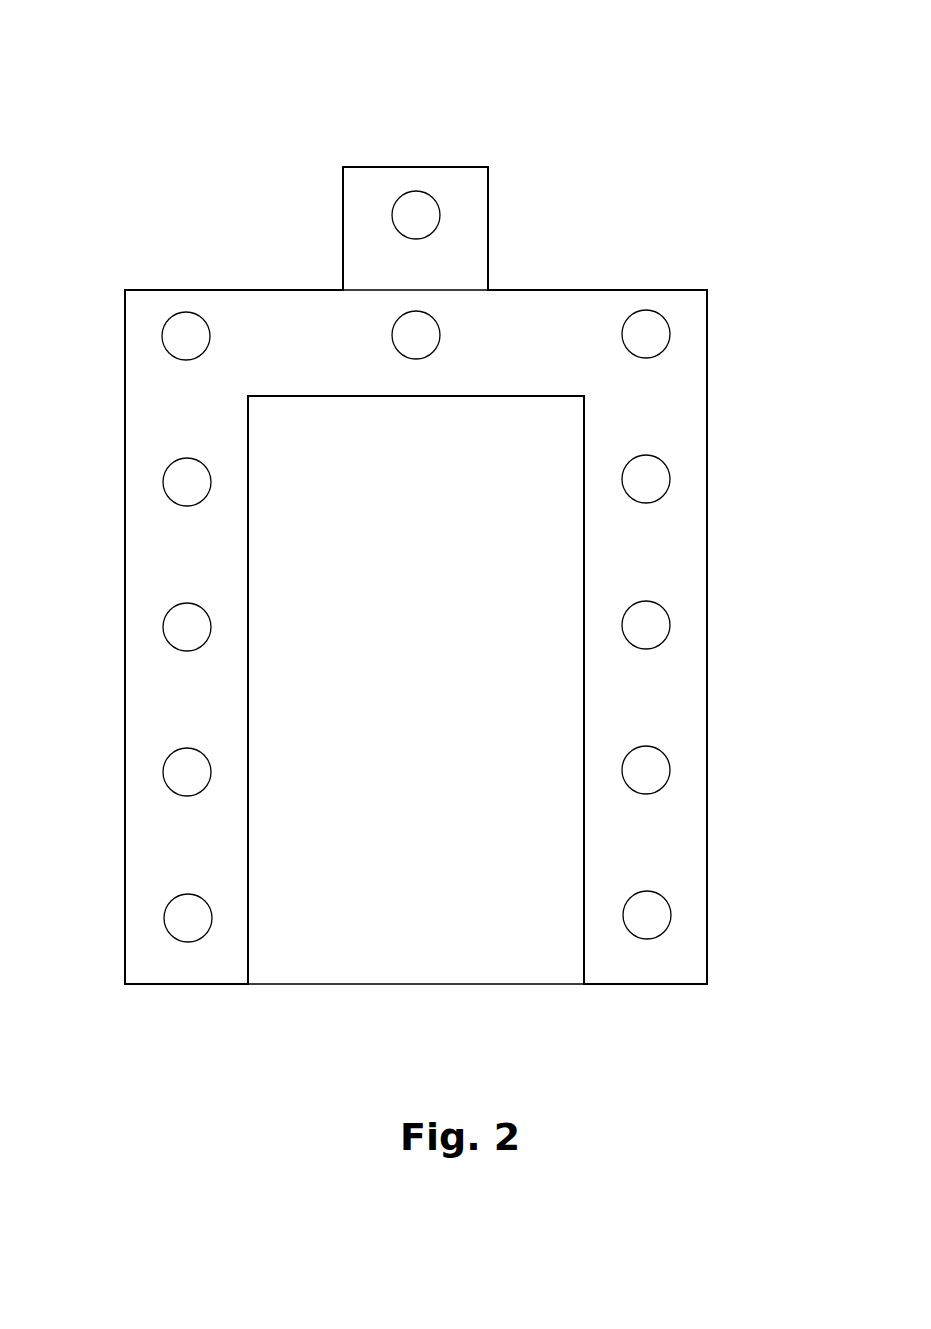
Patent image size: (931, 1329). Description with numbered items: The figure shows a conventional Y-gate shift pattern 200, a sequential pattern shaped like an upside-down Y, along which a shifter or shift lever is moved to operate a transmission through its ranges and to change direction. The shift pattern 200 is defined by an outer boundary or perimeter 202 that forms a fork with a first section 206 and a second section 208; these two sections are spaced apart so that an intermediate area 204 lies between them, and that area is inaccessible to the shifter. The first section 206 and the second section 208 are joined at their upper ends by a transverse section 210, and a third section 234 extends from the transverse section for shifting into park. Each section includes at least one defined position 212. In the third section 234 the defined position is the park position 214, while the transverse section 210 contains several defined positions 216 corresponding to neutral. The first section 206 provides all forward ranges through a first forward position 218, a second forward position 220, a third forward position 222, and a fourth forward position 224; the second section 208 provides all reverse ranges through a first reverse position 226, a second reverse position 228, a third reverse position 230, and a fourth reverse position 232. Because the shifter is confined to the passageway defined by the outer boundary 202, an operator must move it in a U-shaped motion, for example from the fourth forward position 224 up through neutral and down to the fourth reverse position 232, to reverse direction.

The shift pattern 200 is at (105, 130).
The outer boundary 202 is at (185, 986).
The intermediate area 204 is at (450, 700).
The first section 206 is at (199, 284).
The second section 208 is at (591, 284).
The transverse section 210 is at (375, 405).
The defined position 212 is at (733, 308).
The park position 214 is at (416, 212).
The defined positions 216 is at (185, 336).
The first forward position 218 is at (198, 482).
The second forward position 220 is at (198, 628).
The third forward position 222 is at (198, 775).
The fourth forward position 224 is at (200, 921).
The first reverse position 226 is at (636, 483).
The second reverse position 228 is at (636, 627).
The third reverse position 230 is at (636, 770).
The fourth reverse position 232 is at (640, 914).
The third section 234 is at (498, 180).